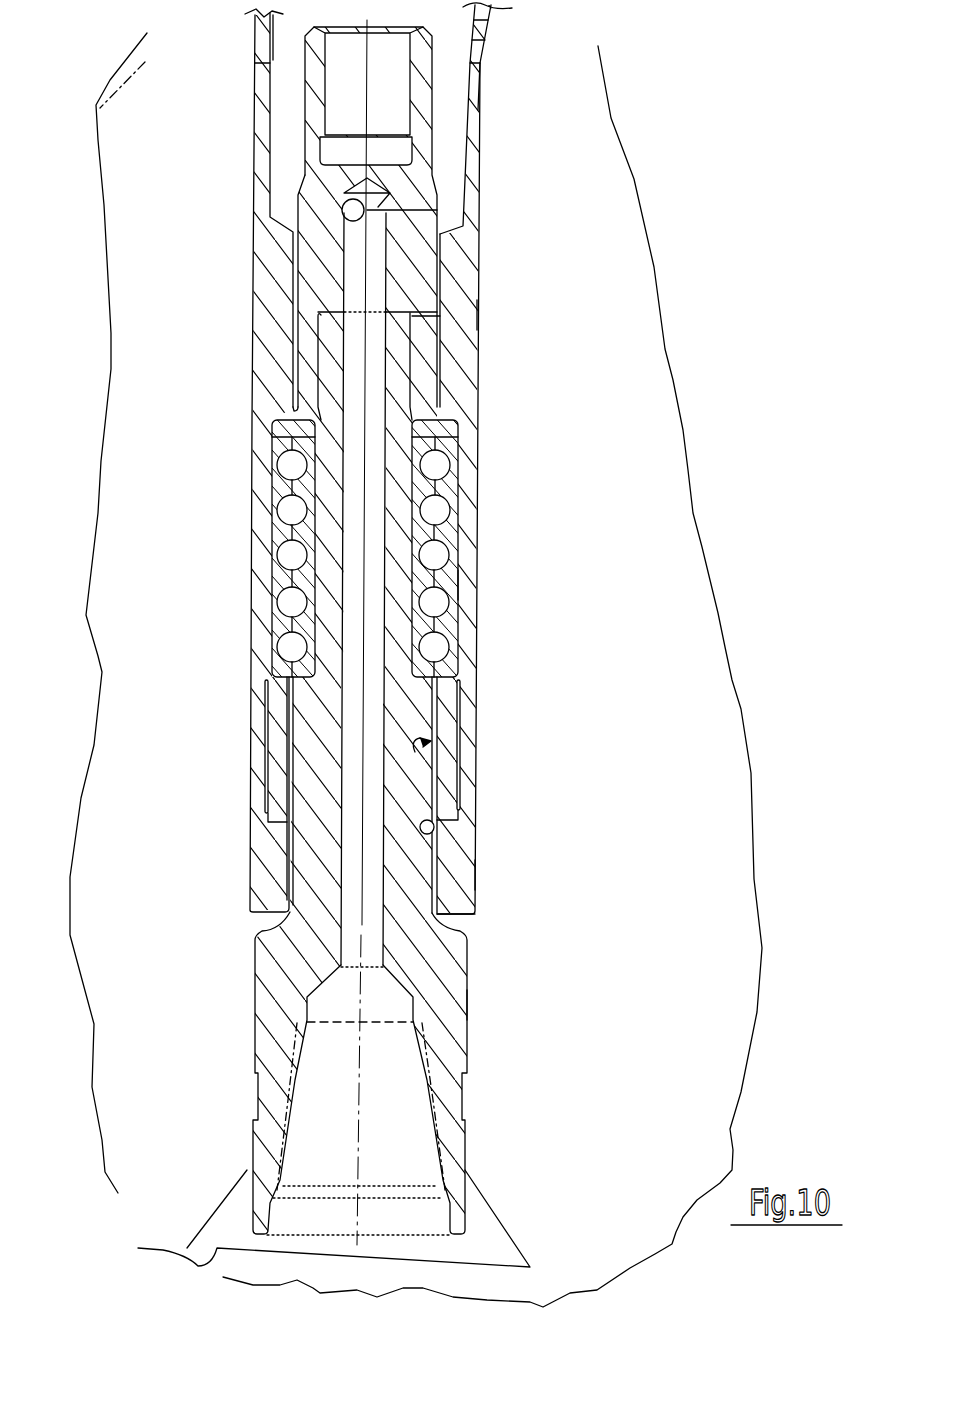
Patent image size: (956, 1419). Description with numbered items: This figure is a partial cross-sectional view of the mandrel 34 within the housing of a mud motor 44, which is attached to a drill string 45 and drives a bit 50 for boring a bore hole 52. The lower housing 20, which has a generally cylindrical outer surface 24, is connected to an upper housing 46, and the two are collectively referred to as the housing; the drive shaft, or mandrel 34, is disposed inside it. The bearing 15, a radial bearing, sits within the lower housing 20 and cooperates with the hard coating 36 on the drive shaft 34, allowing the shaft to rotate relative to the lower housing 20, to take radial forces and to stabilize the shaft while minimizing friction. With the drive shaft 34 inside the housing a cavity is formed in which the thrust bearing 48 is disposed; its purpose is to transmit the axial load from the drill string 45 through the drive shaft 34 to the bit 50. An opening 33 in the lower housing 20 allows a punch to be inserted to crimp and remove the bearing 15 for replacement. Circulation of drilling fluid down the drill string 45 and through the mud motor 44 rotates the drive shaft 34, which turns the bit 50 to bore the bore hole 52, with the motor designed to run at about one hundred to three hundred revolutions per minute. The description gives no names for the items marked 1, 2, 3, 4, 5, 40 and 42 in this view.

The first casing section 1 is at (467, 1003).
The second casing section 2 is at (470, 873).
The third casing section 3 is at (452, 585).
The fourth casing section 4 is at (475, 315).
The fifth casing section 5 is at (478, 107).
The bearing 15 is at (433, 763).
The lower housing 20 is at (268, 857).
The outer surface 24 is at (458, 718).
The opening 33 is at (470, 913).
The mandrel 34 is at (312, 913).
The hard coating 36 is at (430, 835).
The nozzle body 40 is at (467, 1033).
The central bore 42 is at (360, 850).
The mud motor 44 is at (648, 614).
The drill string 45 is at (483, 36).
The upper housing 46 is at (460, 248).
The thrust bearing 48 is at (450, 488).
The bit 50 is at (310, 1218).
The bore hole 52 is at (688, 470).